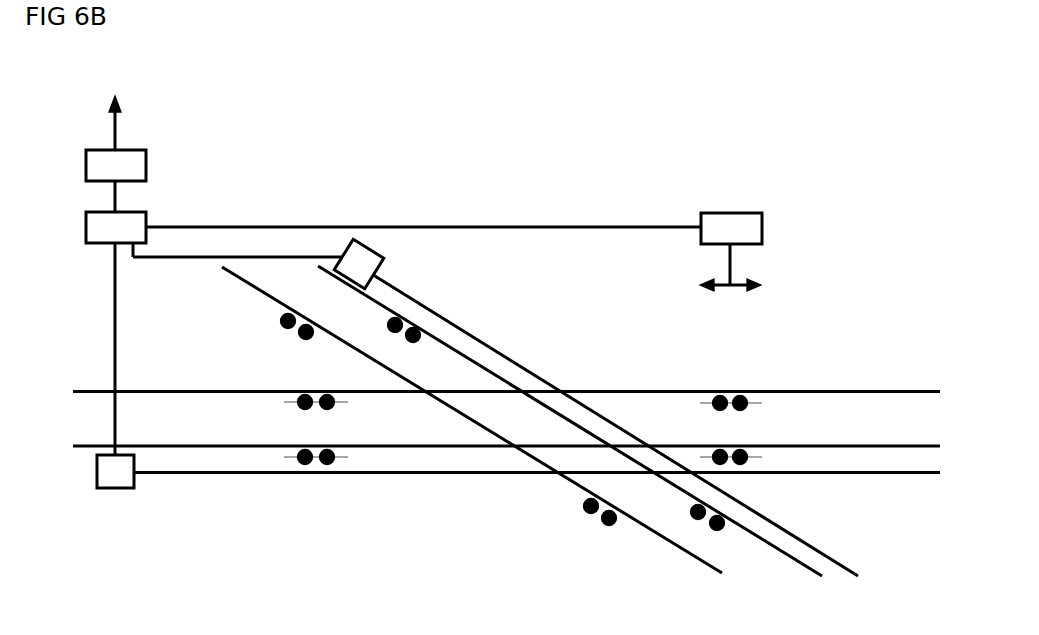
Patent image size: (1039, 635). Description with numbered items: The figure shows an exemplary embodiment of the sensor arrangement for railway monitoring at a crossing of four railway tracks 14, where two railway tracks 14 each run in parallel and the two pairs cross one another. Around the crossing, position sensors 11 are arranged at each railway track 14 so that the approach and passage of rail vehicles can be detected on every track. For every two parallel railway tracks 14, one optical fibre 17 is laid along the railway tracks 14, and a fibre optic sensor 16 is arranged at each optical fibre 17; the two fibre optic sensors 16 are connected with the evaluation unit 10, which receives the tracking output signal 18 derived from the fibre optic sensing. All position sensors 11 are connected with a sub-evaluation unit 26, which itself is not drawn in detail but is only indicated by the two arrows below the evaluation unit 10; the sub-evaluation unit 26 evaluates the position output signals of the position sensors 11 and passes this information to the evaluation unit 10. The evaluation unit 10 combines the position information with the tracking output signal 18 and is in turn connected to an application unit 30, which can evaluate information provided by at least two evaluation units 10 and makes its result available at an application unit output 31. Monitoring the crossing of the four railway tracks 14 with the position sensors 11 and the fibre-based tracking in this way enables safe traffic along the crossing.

The evaluation unit 10 is at (85, 226).
The position sensors 11 is at (392, 328).
The railway tracks 14 is at (890, 446).
The fibre optic sensors 16 is at (120, 490).
The optical fibre 17 is at (812, 545).
The tracking output signal 18 is at (385, 270).
The sub-evaluation unit 26 is at (765, 230).
The application unit 30 is at (85, 163).
The application unit output 31 is at (118, 127).